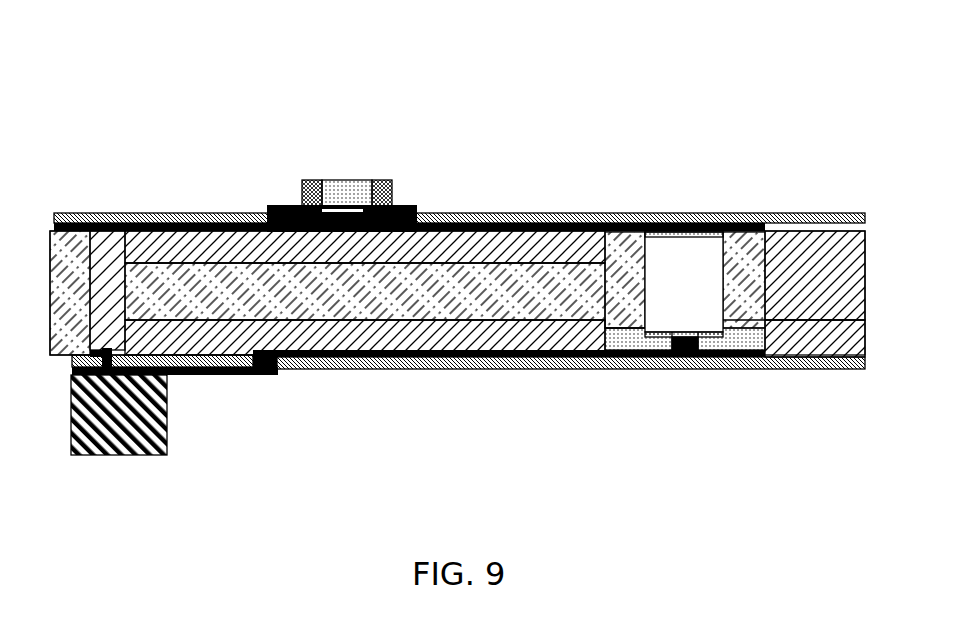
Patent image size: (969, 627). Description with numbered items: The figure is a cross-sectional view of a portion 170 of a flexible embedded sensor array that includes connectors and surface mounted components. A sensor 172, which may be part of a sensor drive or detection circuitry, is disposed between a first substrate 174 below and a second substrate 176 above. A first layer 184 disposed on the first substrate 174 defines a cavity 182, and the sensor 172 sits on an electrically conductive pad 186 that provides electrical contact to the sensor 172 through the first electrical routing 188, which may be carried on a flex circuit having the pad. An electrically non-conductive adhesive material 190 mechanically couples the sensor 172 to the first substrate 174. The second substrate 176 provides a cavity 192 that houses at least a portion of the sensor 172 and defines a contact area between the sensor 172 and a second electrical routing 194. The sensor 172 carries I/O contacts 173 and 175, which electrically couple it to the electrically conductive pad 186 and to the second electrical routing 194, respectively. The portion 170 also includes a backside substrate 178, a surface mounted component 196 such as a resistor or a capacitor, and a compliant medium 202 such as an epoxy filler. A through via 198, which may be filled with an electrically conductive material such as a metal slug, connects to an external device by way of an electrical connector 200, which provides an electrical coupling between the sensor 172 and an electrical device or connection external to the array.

The portion of flexible embedded sensor array 170 is at (122, 34).
The sensor 172 is at (702, 294).
The I/O contact 173 is at (711, 322).
The first substrate 174 is at (468, 372).
The I/O contact 175 is at (696, 245).
The second substrate 176 is at (815, 240).
The backside substrate 178 is at (560, 214).
The cavity 182 is at (550, 357).
The first layer 184 is at (820, 340).
The electrically conductive pad 186 is at (671, 357).
The first electrical routing 188 is at (197, 375).
The electrically non-conductive adhesive material 190 is at (740, 345).
The cavity 192 is at (620, 238).
The second electrical routing 194 is at (453, 220).
The surface mounted component 196 is at (347, 180).
The through via 198 is at (110, 247).
The electrical connector 200 is at (167, 420).
The compliant medium 202 is at (325, 302).